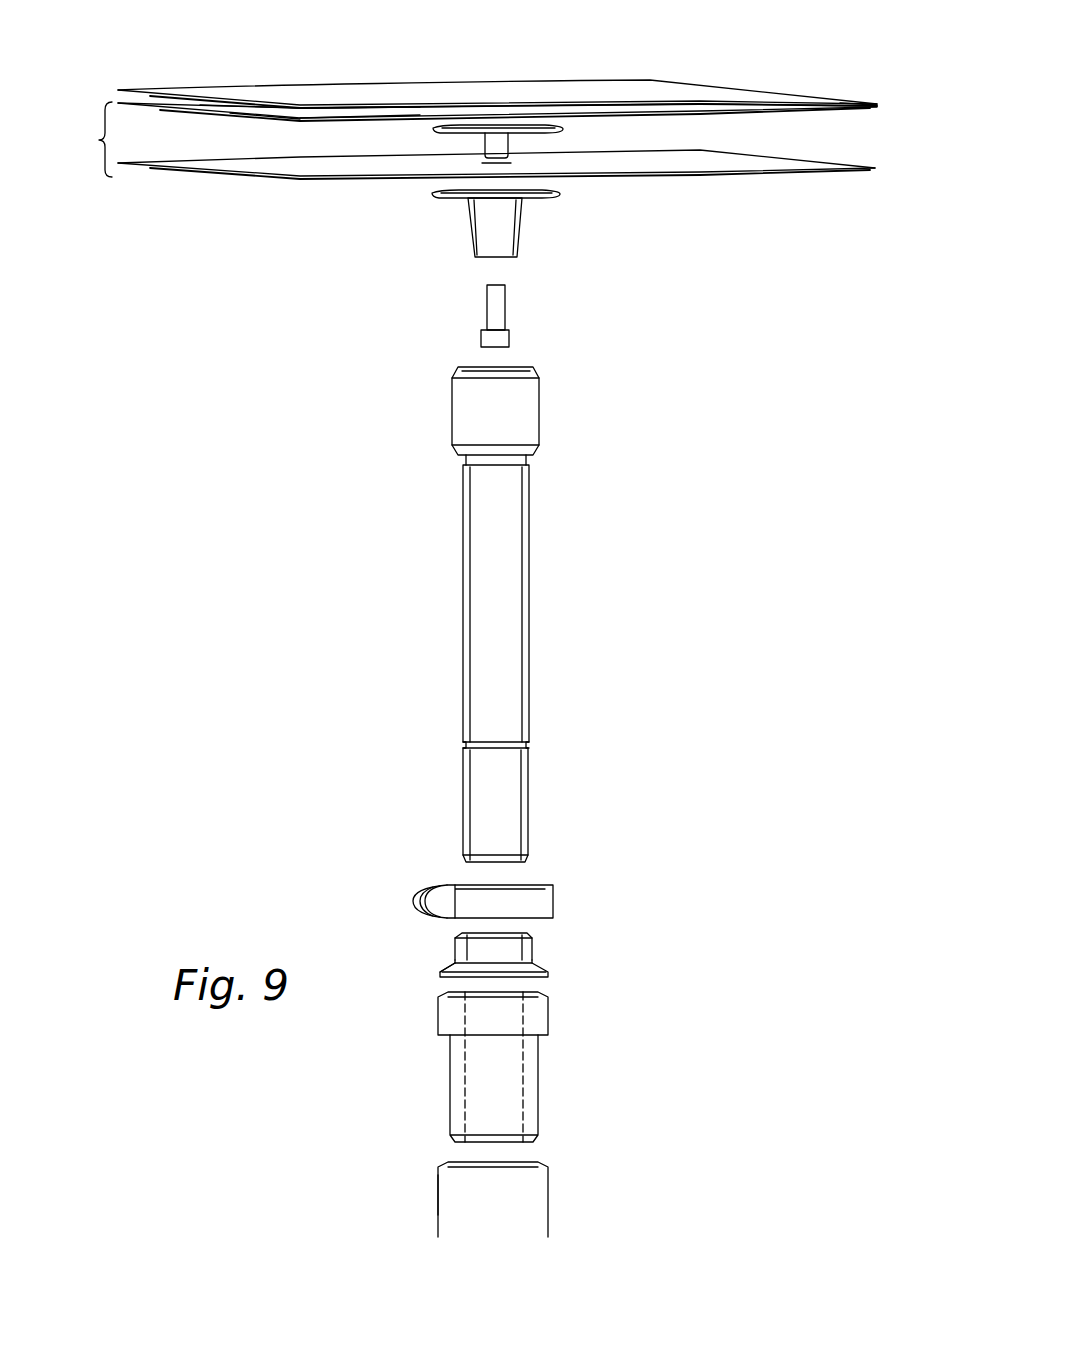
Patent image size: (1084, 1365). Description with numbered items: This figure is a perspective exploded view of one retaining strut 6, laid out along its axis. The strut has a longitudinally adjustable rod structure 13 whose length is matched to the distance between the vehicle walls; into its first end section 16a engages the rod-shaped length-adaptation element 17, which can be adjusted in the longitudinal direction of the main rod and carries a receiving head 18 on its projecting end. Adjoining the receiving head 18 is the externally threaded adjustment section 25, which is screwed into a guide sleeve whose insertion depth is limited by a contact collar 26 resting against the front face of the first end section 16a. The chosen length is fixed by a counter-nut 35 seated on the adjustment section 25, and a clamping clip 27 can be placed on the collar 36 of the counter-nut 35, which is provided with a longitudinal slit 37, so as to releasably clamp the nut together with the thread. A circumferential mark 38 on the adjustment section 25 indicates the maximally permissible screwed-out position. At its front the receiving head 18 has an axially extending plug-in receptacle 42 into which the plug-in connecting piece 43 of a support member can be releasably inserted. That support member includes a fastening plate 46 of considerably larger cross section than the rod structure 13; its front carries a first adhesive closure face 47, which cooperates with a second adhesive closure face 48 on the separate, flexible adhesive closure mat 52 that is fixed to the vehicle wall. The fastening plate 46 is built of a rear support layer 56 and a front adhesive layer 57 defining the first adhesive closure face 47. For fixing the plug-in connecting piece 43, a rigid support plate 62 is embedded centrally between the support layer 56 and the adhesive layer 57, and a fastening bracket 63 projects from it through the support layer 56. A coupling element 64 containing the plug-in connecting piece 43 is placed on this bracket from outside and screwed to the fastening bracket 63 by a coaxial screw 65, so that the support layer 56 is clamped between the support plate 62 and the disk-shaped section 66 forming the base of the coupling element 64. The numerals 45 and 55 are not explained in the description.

The retaining strut 6 is at (541, 709).
The rod structure 13 is at (509, 1189).
The first end section 16a is at (438, 1192).
The length-adaptation element 17 is at (520, 533).
The receiving head 18 is at (531, 394).
The adjustment section 25 is at (510, 803).
The contact collar 26 is at (538, 1013).
The clamping clip 27 is at (543, 898).
The counter-nut 35 is at (535, 968).
The collar 36 is at (530, 948).
The longitudinal slit 37 is at (458, 958).
The mark 38 is at (520, 745).
The plug-in receptacle 42 is at (507, 368).
The plug-in connecting piece 43 is at (507, 230).
The plate tip 45 is at (878, 104).
The fastening plate 46 is at (92, 139).
The first adhesive closure face 47 is at (277, 119).
The second adhesive closure face 48 is at (326, 110).
The adhesive closure mat 52 is at (382, 102).
The top plate 55 is at (663, 92).
The support layer 56 is at (308, 180).
The adhesive layer 57 is at (340, 120).
The support plate 62 is at (562, 128).
The fastening bracket 63 is at (493, 145).
The coupling element 64 is at (508, 224).
The screw 65 is at (498, 305).
The disk-shaped section 66 is at (560, 197).